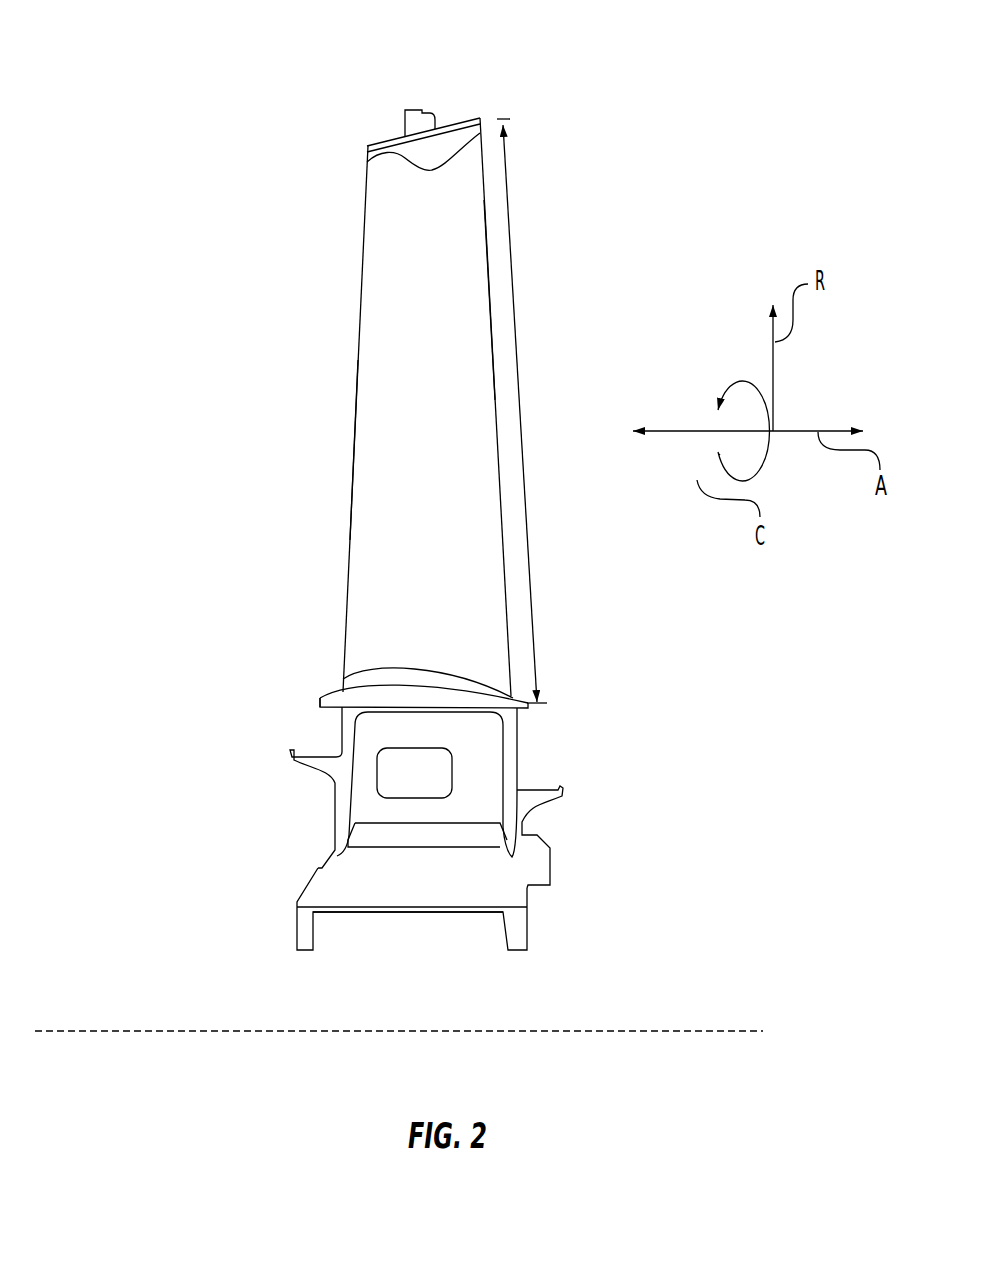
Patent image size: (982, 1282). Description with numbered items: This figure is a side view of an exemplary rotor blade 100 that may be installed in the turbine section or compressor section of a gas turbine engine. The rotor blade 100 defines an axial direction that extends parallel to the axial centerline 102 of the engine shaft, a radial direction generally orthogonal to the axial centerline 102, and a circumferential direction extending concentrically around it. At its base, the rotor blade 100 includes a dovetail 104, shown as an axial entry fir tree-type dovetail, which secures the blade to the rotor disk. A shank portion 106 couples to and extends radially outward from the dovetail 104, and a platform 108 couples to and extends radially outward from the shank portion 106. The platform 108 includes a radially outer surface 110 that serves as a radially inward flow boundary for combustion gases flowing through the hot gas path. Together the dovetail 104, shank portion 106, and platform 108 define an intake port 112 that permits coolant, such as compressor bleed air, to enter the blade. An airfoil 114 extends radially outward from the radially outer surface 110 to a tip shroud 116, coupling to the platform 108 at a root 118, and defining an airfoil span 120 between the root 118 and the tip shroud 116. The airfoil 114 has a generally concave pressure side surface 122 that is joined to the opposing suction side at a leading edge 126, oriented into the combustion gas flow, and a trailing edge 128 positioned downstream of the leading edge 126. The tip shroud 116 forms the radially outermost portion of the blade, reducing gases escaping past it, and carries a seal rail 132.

The rotor blade 100 is at (204, 109).
The axial centerline 102 is at (682, 1032).
The dovetail 104 is at (296, 913).
The shank portion 106 is at (518, 760).
The platform 108 is at (315, 700).
The radially outer surface 110 is at (328, 697).
The intake port 112 is at (406, 924).
The airfoil 114 is at (338, 327).
The tip shroud 116 is at (468, 122).
The root 118 is at (460, 675).
The airfoil span 120 is at (517, 327).
The pressure side surface 122 is at (442, 397).
The leading edge 126 is at (353, 477).
The trailing edge 128 is at (487, 220).
The seal rail 132 is at (417, 110).